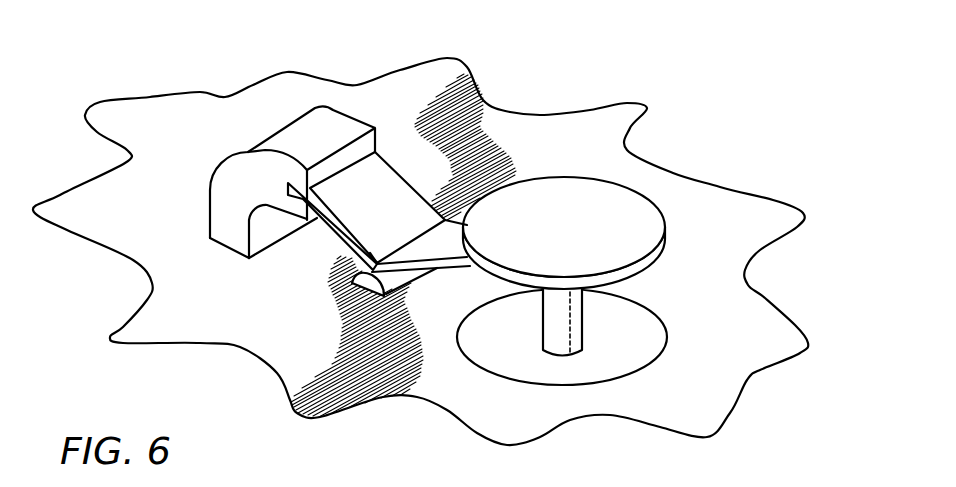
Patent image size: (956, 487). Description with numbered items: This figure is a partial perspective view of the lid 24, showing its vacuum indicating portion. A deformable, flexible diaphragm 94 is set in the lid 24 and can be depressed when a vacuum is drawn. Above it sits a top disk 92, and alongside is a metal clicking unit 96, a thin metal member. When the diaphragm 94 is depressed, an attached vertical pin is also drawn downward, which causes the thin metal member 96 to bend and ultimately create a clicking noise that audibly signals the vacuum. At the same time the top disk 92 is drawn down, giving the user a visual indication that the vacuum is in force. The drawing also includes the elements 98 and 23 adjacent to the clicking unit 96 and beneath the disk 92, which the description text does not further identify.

The pin 23 is at (572, 315).
The lid 24 is at (602, 140).
The top disk 92 is at (552, 198).
The deformable diaphragm 94 is at (638, 343).
The metal clicking unit 96 is at (392, 197).
The support block 98 is at (293, 133).